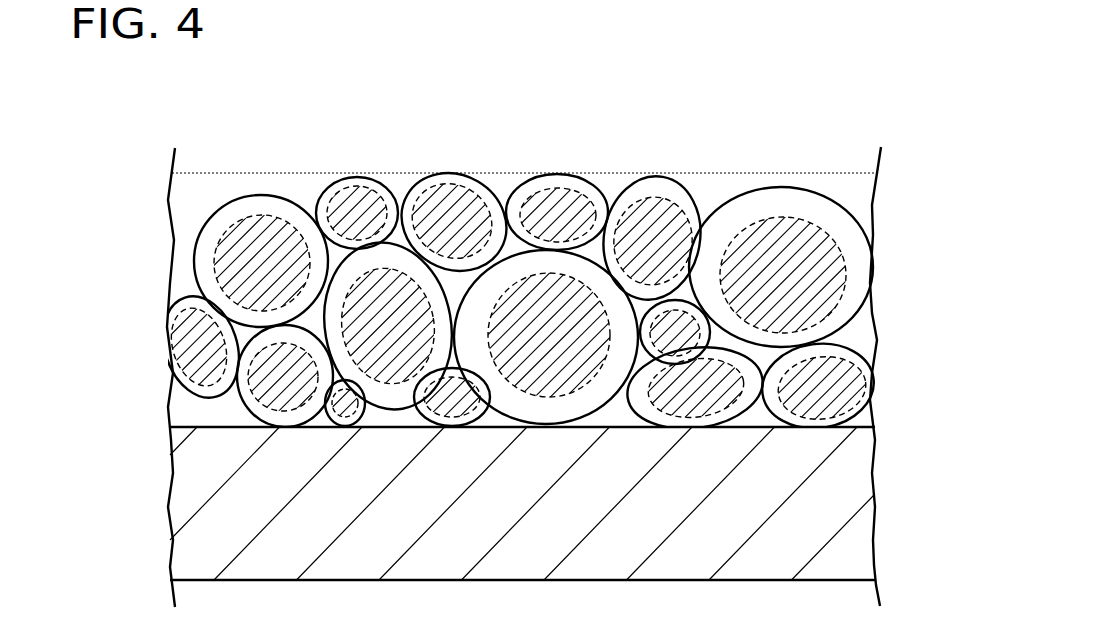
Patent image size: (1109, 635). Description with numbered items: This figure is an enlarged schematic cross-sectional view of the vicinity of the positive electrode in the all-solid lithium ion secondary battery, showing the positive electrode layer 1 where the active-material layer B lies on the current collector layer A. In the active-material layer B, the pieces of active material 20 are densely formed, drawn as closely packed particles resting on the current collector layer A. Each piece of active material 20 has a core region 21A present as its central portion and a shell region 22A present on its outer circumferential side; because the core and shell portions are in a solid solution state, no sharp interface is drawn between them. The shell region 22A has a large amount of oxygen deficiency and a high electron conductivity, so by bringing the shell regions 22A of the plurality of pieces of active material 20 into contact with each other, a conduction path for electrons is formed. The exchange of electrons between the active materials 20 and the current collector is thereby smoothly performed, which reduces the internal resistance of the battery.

The positive electrode layer 1 is at (788, 90).
The active material 20 is at (554, 255).
The core region 21A is at (554, 271).
The shell region 22A is at (454, 183).
The current collector layer A is at (864, 478).
The active-material layer B is at (864, 340).